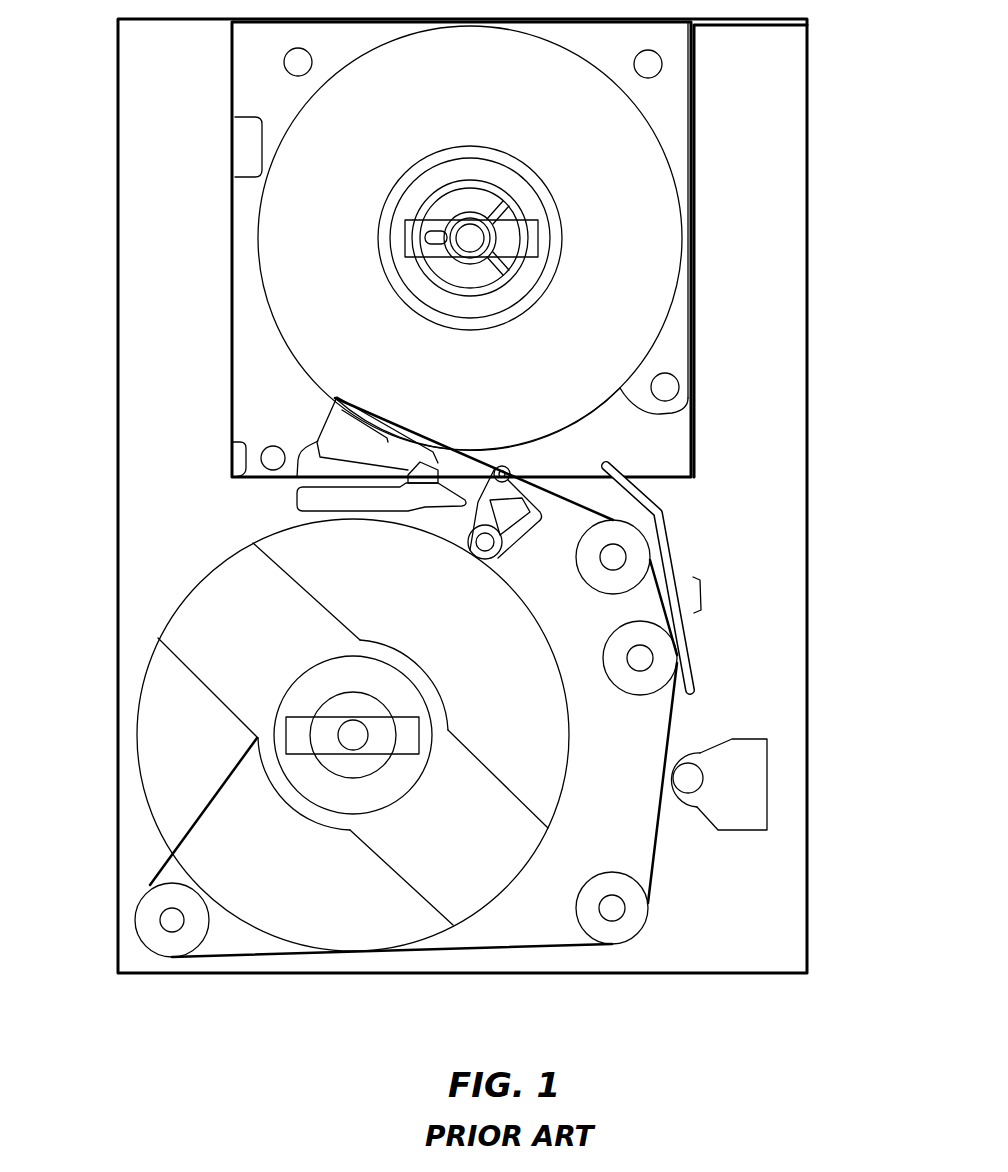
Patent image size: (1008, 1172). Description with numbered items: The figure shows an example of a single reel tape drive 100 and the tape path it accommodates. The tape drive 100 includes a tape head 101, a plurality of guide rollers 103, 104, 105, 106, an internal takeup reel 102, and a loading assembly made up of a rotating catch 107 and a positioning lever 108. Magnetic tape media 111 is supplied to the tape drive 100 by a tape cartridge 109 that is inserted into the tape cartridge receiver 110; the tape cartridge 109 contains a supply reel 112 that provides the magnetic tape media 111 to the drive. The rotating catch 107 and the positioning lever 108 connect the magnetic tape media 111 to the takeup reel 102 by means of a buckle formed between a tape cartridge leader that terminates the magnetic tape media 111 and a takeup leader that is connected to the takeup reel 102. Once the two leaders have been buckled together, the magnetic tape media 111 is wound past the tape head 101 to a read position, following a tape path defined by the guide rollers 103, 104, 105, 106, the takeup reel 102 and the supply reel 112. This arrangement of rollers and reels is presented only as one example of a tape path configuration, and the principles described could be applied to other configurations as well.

The tape drive 100 is at (807, 432).
The tape head 101 is at (767, 783).
The takeup reel 102 is at (566, 772).
The guide roller 103 is at (608, 588).
The guide roller 104 is at (626, 686).
The guide roller 105 is at (640, 920).
The guide roller 106 is at (143, 922).
The rotating catch 107 is at (530, 530).
The positioning lever 108 is at (297, 492).
The tape cartridge 109 is at (688, 318).
The tape cartridge receiver 110 is at (694, 83).
The magnetic tape media 111 is at (672, 722).
The supply reel 112 is at (257, 230).